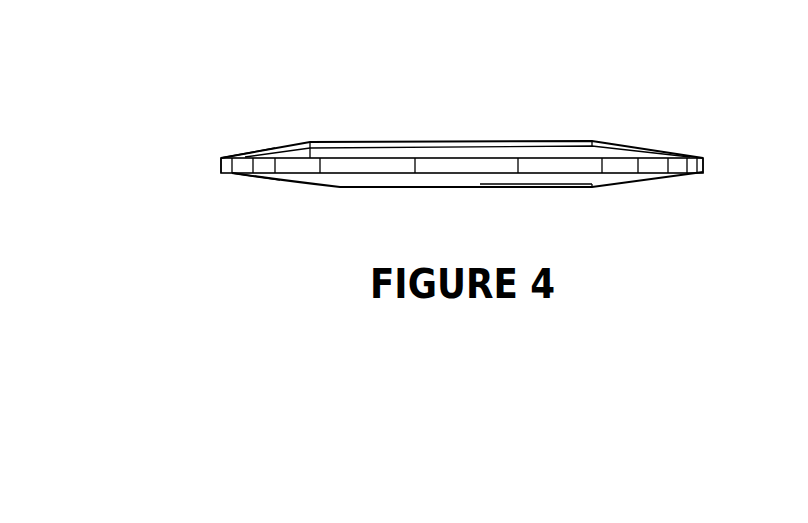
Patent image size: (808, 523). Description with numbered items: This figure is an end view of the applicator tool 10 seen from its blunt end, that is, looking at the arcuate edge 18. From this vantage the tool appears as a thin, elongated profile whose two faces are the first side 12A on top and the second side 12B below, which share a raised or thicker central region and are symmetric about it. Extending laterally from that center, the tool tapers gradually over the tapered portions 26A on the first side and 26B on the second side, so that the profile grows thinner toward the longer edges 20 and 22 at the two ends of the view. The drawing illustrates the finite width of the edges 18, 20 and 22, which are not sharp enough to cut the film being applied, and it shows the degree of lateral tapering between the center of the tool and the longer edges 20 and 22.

The applicator tool 10 is at (650, 86).
The first side 12A is at (388, 141).
The second side 12B is at (377, 188).
The arcuate edge 18 is at (463, 160).
The arcuate edge 20 is at (705, 167).
The arcuate edge 22 is at (221, 166).
The tapered portion 26A is at (270, 151).
The tapered portion 26B is at (262, 180).